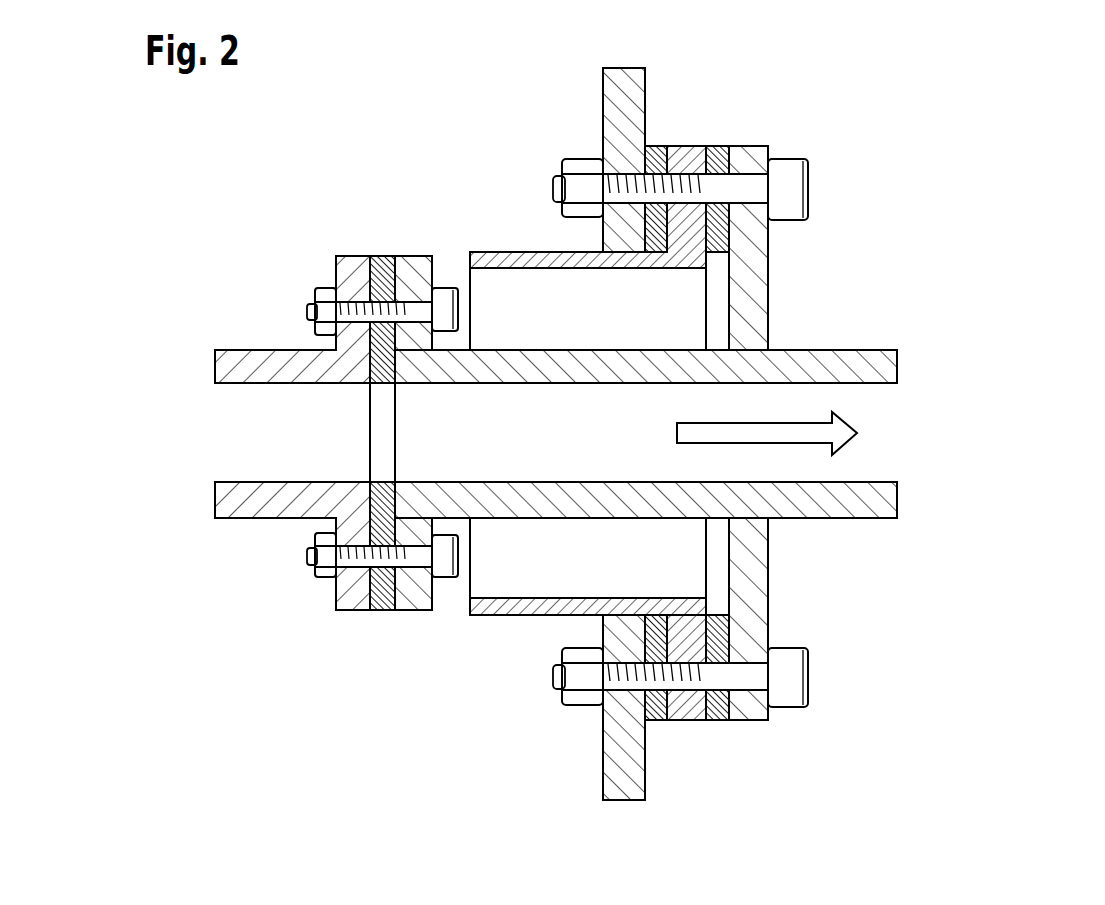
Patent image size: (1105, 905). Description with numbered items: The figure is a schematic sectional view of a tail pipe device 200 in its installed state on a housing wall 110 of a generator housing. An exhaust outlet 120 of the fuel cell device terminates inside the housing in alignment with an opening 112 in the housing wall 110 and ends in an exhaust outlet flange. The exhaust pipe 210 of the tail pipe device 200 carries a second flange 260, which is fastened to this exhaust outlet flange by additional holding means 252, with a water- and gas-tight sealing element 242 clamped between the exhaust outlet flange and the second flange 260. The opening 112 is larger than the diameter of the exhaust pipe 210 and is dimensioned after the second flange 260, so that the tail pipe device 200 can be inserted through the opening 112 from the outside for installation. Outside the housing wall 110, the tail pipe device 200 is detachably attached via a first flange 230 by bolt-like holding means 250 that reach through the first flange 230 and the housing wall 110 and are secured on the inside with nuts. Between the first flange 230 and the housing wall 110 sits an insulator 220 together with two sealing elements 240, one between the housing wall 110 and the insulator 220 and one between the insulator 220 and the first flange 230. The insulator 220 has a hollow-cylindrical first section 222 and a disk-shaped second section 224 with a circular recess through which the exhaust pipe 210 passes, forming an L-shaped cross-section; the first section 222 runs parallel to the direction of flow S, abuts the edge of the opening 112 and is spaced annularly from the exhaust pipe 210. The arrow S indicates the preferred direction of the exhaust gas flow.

The housing wall 110 is at (625, 117).
The opening 112 is at (587, 241).
The exhaust outlet 120 is at (242, 367).
The tail pipe device 200 is at (958, 126).
The exhaust pipe 210 is at (838, 505).
The insulator 220 is at (650, 583).
The first section 222 is at (540, 603).
The second section 224 is at (692, 700).
The first flange 230 is at (768, 288).
The sealing element 240 is at (716, 157).
The sealing element 242 is at (385, 588).
The holding means 250 is at (790, 175).
The additional holding means 252 is at (445, 302).
The second flange 260 is at (413, 583).
The direction of flow S is at (804, 432).